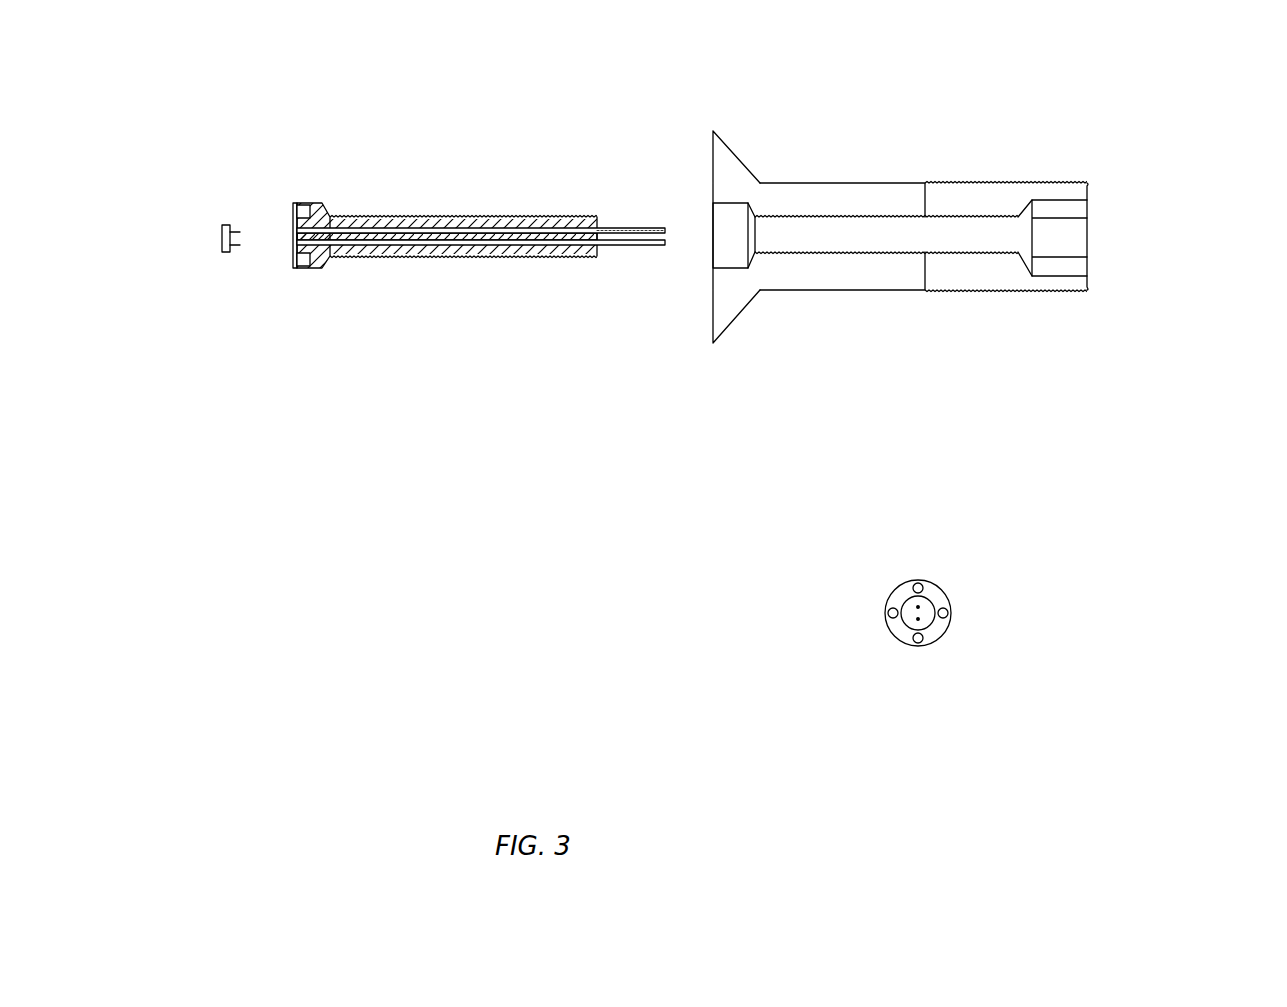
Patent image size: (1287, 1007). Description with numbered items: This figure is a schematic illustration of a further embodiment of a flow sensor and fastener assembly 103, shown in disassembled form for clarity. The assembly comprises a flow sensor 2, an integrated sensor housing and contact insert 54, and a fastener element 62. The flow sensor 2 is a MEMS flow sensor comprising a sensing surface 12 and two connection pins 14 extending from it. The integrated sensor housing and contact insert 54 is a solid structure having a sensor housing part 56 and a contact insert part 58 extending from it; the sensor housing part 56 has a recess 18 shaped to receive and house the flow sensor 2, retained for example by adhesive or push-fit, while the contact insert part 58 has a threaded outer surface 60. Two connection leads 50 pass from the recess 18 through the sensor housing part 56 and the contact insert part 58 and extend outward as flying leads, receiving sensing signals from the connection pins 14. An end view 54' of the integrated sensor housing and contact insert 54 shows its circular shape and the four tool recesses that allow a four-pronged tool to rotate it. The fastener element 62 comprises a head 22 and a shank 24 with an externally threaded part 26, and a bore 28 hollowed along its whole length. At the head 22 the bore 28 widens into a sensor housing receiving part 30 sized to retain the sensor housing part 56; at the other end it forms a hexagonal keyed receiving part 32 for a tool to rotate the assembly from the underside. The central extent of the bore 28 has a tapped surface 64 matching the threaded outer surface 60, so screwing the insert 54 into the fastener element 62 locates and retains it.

The flow sensor 2 is at (218, 170).
The sensing surface 12 is at (222, 242).
The connection pins 14 is at (236, 256).
The recess 18 is at (295, 250).
The head 22 is at (724, 165).
The shank 24 is at (836, 192).
The externally threaded part 26 is at (997, 184).
The bore 28 is at (948, 235).
The sensor housing receiving part 30 is at (732, 250).
The keyed receiving part 32 is at (1052, 245).
The connection leads 50 is at (625, 248).
The integrated sensor housing and contact insert 54 is at (445, 224).
The end view of the integrated sensor housing and contact insert 54' is at (924, 638).
The sensor housing part 56 is at (328, 265).
The contact insert part 58 is at (478, 255).
The threaded outer surface 60 is at (493, 222).
The fastener element 62 is at (915, 128).
The tapped surface 64 is at (862, 252).
The flow sensor and fastener assembly 103 is at (1166, 131).